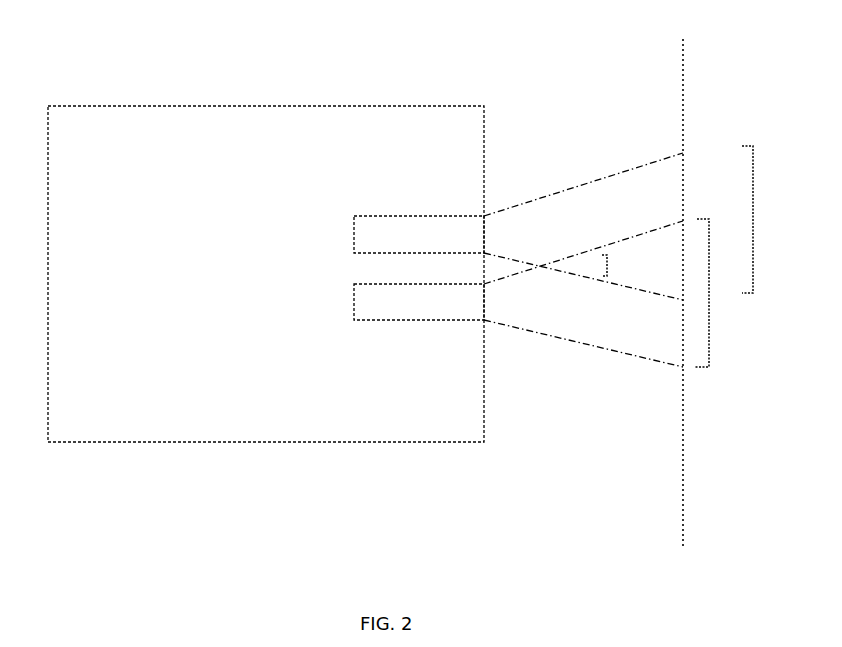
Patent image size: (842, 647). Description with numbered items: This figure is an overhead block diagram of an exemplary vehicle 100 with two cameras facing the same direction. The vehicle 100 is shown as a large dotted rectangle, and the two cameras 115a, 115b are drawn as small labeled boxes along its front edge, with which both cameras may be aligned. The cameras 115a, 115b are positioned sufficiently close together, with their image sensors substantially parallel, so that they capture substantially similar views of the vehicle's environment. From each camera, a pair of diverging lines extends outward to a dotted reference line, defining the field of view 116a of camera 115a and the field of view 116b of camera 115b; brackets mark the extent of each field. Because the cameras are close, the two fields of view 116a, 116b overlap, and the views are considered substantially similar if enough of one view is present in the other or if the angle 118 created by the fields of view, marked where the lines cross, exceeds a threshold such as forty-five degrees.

The vehicle 100 is at (76, 66).
The camera 115a is at (419, 234).
The camera 115b is at (419, 302).
The field of view 116a is at (753, 220).
The field of view 116b is at (709, 293).
The angle 118 is at (625, 266).